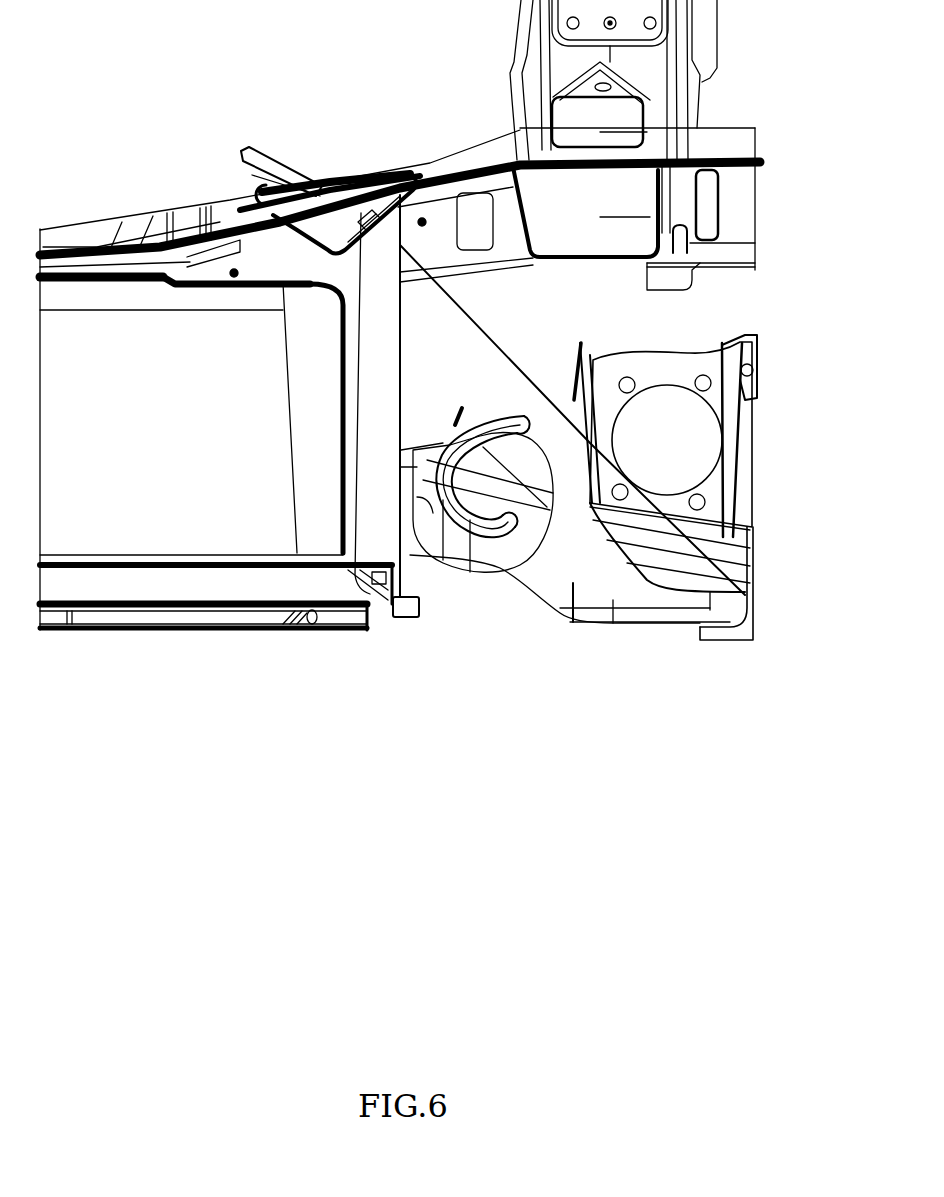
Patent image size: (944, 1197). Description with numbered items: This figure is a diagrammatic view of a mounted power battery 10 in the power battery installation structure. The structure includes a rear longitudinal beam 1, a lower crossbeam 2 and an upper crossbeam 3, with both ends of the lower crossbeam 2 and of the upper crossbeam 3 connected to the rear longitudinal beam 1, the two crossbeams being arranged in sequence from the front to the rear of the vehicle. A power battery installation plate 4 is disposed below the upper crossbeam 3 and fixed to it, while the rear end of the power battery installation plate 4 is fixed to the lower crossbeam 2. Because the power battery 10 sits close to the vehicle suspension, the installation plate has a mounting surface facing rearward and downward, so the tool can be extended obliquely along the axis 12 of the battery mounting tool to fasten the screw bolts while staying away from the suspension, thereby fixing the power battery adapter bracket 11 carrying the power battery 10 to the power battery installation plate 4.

The rear longitudinal beam 1 is at (400, 192).
The lower crossbeam 2 is at (576, 145).
The upper crossbeam 3 is at (344, 138).
The power battery installation plate 4 is at (191, 390).
The power battery 10 is at (216, 486).
The power battery adapter bracket 11 is at (308, 406).
The axis of the battery mounting tool 12 is at (583, 461).